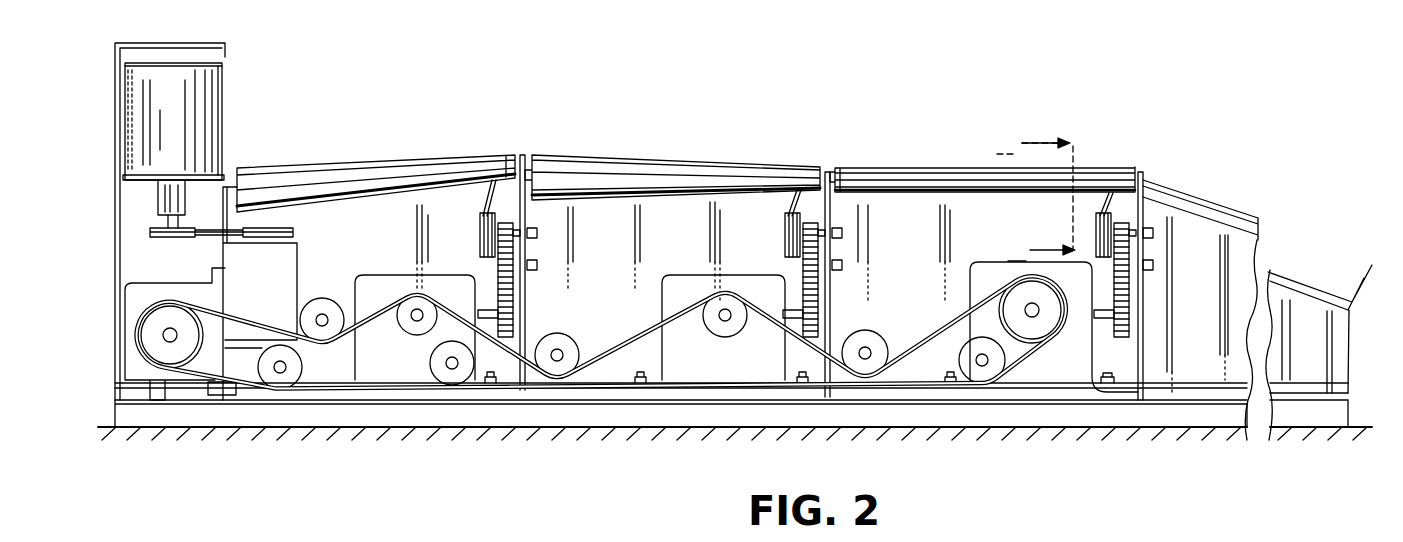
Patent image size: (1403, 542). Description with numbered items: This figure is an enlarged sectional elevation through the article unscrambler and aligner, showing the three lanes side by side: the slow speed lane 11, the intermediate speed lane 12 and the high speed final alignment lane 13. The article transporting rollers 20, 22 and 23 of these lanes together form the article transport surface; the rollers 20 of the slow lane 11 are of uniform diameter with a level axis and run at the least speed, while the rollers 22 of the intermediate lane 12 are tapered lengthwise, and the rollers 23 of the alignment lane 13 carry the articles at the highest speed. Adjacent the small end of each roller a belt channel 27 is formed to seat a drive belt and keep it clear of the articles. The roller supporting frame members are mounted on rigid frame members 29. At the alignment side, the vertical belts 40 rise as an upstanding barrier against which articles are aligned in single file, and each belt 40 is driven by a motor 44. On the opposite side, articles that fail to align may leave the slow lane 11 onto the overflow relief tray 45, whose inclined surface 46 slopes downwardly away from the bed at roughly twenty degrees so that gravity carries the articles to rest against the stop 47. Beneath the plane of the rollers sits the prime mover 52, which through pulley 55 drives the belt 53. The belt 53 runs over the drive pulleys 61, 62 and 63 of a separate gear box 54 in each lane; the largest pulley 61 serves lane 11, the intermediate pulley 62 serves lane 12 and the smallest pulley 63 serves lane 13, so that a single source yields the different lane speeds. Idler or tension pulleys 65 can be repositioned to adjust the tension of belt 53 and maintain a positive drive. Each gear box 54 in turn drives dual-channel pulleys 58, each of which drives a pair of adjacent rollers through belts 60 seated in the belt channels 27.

The slow speed lane 11 is at (982, 174).
The intermediate speed lane 12 is at (672, 142).
The high speed final alignment lane 13 is at (376, 148).
The rollers 20 is at (867, 165).
The rollers 22 is at (560, 150).
The rollers 23 is at (290, 165).
The belt channel 27 is at (492, 158).
The frame members 29 is at (530, 289).
The vertical belts 40 is at (226, 102).
The motor 44 is at (286, 263).
The overflow relief tray 45 is at (1221, 284).
The inclined surface 46 is at (1182, 186).
The stop 47 is at (1368, 270).
The prime mover 52 is at (150, 383).
The belt 53 is at (313, 388).
The gear box 54 is at (412, 374).
The pulley 55 is at (177, 368).
The pulleys 58 is at (480, 248).
The belts 60 is at (486, 194).
The drive pulley 61 is at (1041, 320).
The pulley 62 is at (733, 325).
The pulley 63 is at (417, 322).
The idler or tension pulleys 65 is at (322, 298).